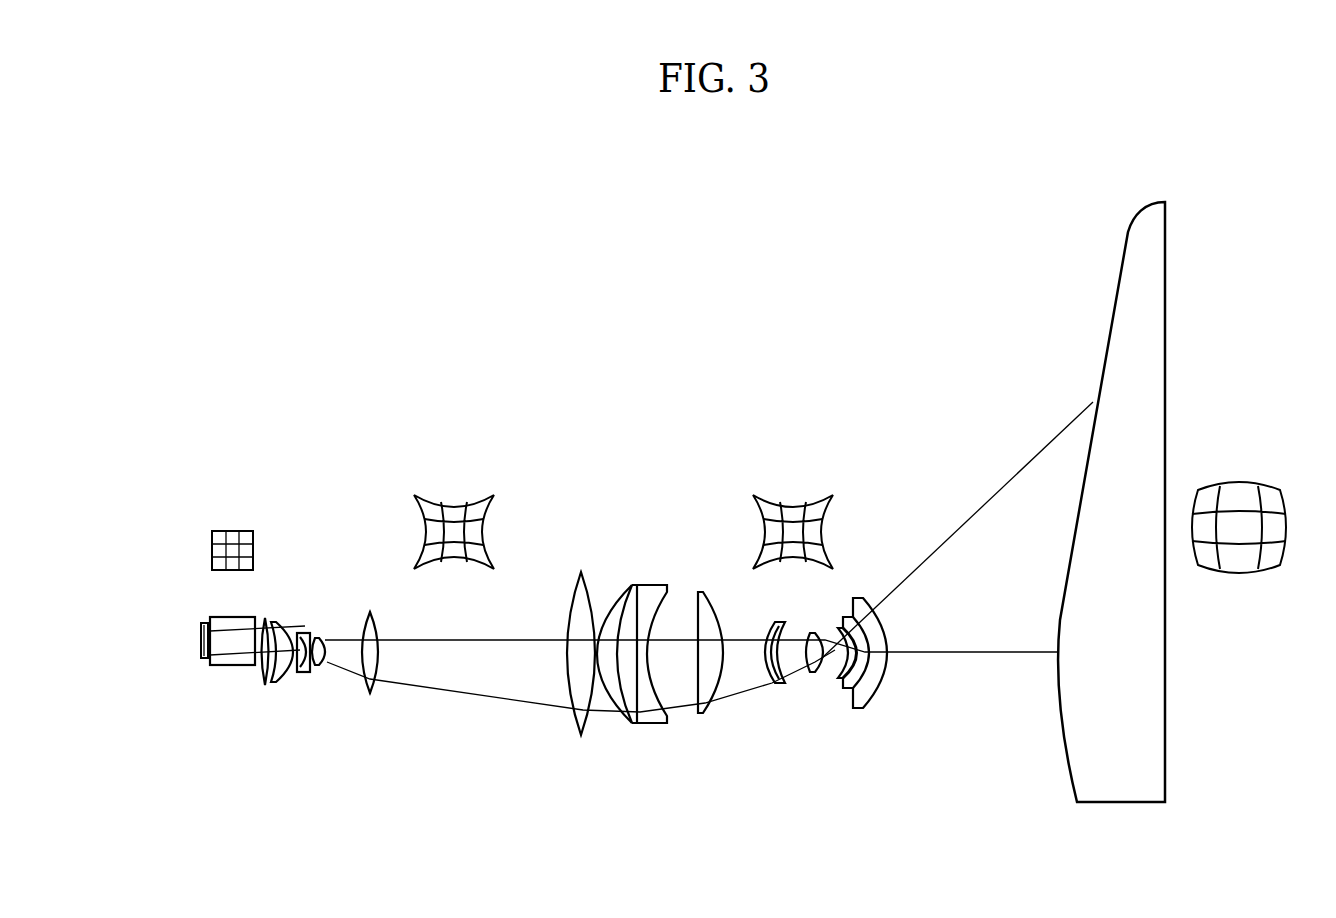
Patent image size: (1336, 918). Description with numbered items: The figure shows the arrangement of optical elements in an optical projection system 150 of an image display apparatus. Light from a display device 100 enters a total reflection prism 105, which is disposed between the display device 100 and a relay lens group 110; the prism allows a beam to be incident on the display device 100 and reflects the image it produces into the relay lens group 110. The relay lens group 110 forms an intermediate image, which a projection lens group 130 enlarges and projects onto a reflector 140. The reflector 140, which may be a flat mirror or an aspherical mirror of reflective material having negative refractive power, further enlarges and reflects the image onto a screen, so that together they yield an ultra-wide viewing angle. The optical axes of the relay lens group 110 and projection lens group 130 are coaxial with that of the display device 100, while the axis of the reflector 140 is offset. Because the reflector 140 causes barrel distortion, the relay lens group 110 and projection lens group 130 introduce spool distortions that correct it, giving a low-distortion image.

The display device 100 is at (203, 660).
The total reflection prism 105 is at (230, 667).
The relay lens group 110 is at (717, 735).
The projection lens group 130 is at (900, 735).
The reflector 140 is at (1113, 292).
The optical projection system 150 is at (273, 475).